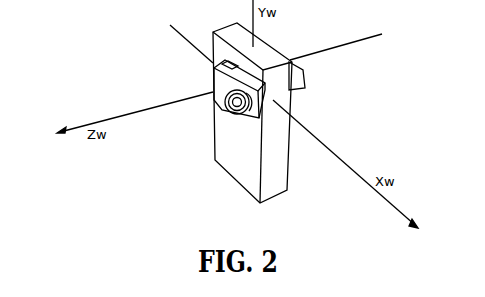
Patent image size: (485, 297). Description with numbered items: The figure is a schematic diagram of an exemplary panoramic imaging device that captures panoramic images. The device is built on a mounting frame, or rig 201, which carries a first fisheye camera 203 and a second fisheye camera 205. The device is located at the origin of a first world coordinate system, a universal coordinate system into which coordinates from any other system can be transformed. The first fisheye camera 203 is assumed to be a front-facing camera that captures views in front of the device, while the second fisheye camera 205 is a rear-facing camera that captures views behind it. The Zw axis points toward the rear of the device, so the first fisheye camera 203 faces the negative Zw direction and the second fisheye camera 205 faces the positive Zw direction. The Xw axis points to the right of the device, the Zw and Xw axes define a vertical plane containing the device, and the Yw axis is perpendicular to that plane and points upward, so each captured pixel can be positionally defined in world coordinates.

The rig 201 is at (287, 175).
The first fisheye camera 203 is at (300, 70).
The second fisheye camera 205 is at (213, 67).